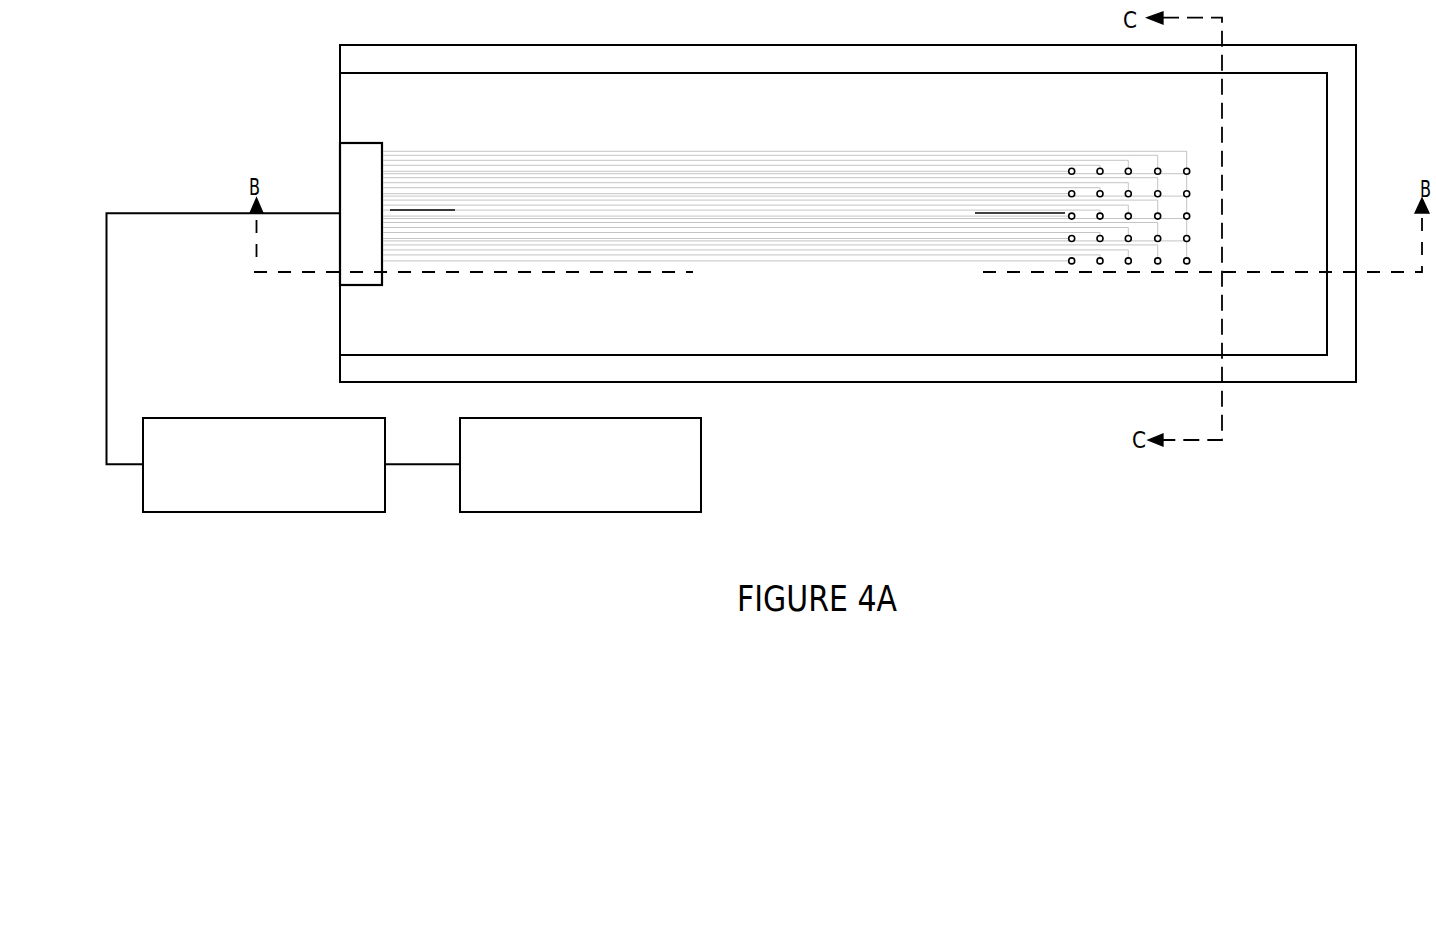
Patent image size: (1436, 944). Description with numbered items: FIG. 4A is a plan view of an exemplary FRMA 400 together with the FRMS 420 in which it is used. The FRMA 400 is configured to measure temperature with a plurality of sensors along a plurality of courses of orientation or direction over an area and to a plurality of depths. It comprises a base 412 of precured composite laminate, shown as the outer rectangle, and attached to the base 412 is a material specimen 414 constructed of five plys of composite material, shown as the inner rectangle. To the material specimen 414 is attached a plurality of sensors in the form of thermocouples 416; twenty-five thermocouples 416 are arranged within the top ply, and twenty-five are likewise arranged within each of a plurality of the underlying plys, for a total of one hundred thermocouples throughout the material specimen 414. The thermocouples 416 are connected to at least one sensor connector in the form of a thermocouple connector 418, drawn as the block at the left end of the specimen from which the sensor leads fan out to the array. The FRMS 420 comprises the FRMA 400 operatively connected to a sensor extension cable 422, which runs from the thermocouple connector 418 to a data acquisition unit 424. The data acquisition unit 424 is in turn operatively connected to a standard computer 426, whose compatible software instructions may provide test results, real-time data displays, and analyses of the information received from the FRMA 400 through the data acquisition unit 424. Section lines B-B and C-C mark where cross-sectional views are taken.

The FRMA 400 is at (263, 78).
The base 412 is at (1357, 130).
The material specimen 414 is at (1327, 226).
The thermocouples 416 is at (1147, 127).
The thermocouple connector 418 is at (340, 175).
The FRMS 420 is at (92, 485).
The sensor extension cable 422 is at (218, 213).
The data acquisition unit 424 is at (238, 512).
The computer 426 is at (573, 512).